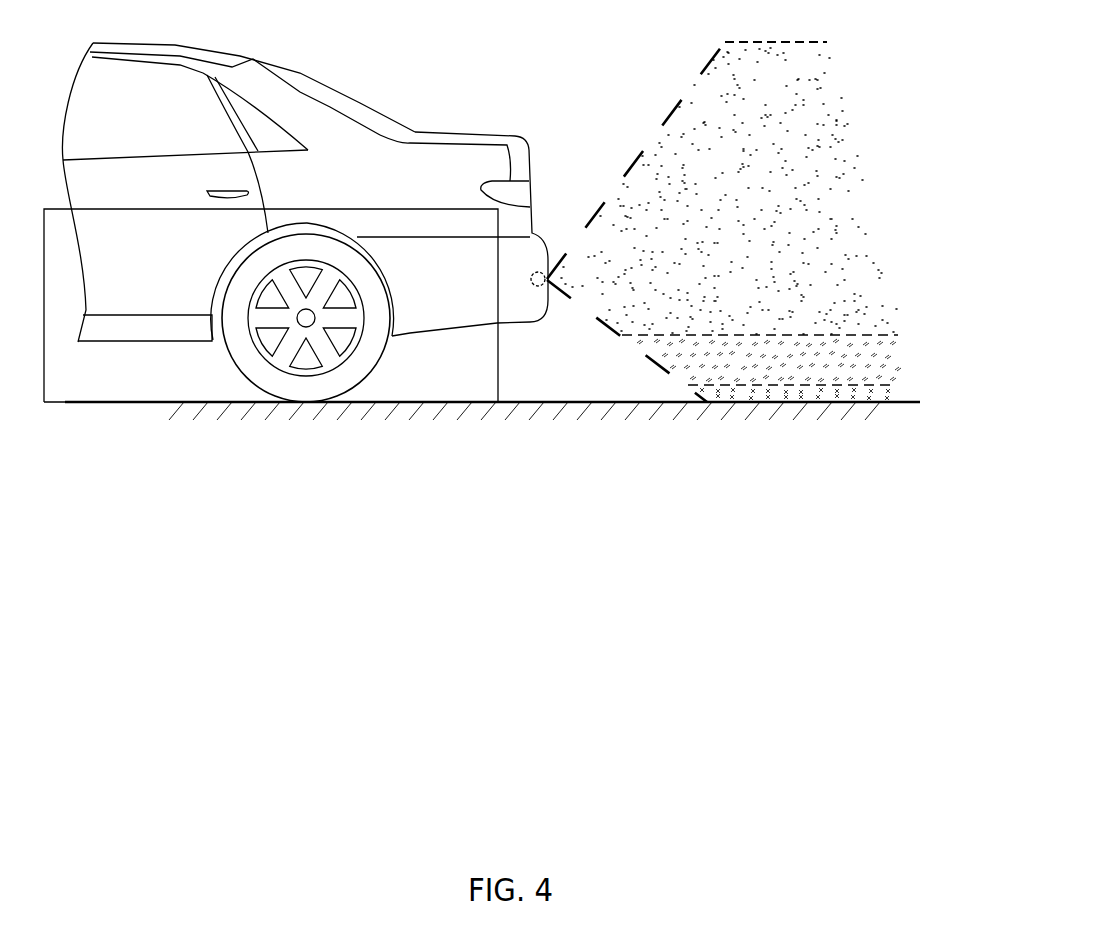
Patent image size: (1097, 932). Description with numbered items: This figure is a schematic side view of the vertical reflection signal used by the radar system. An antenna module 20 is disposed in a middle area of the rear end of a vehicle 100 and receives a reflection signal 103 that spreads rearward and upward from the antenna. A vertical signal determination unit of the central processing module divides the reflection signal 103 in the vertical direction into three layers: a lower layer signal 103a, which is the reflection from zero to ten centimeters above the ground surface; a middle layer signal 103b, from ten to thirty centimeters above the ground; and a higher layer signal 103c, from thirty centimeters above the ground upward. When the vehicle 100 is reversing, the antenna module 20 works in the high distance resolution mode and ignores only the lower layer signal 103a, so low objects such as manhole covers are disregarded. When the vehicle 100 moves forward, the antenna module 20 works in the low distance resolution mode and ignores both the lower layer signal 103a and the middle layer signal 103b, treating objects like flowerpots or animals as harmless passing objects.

The vehicle 100 is at (332, 77).
The antenna module 20 is at (541, 271).
The reflection signal 103 is at (681, 101).
The lower layer signal 103a is at (820, 390).
The middle layer signal 103b is at (892, 360).
The higher layer signal 103c is at (855, 123).